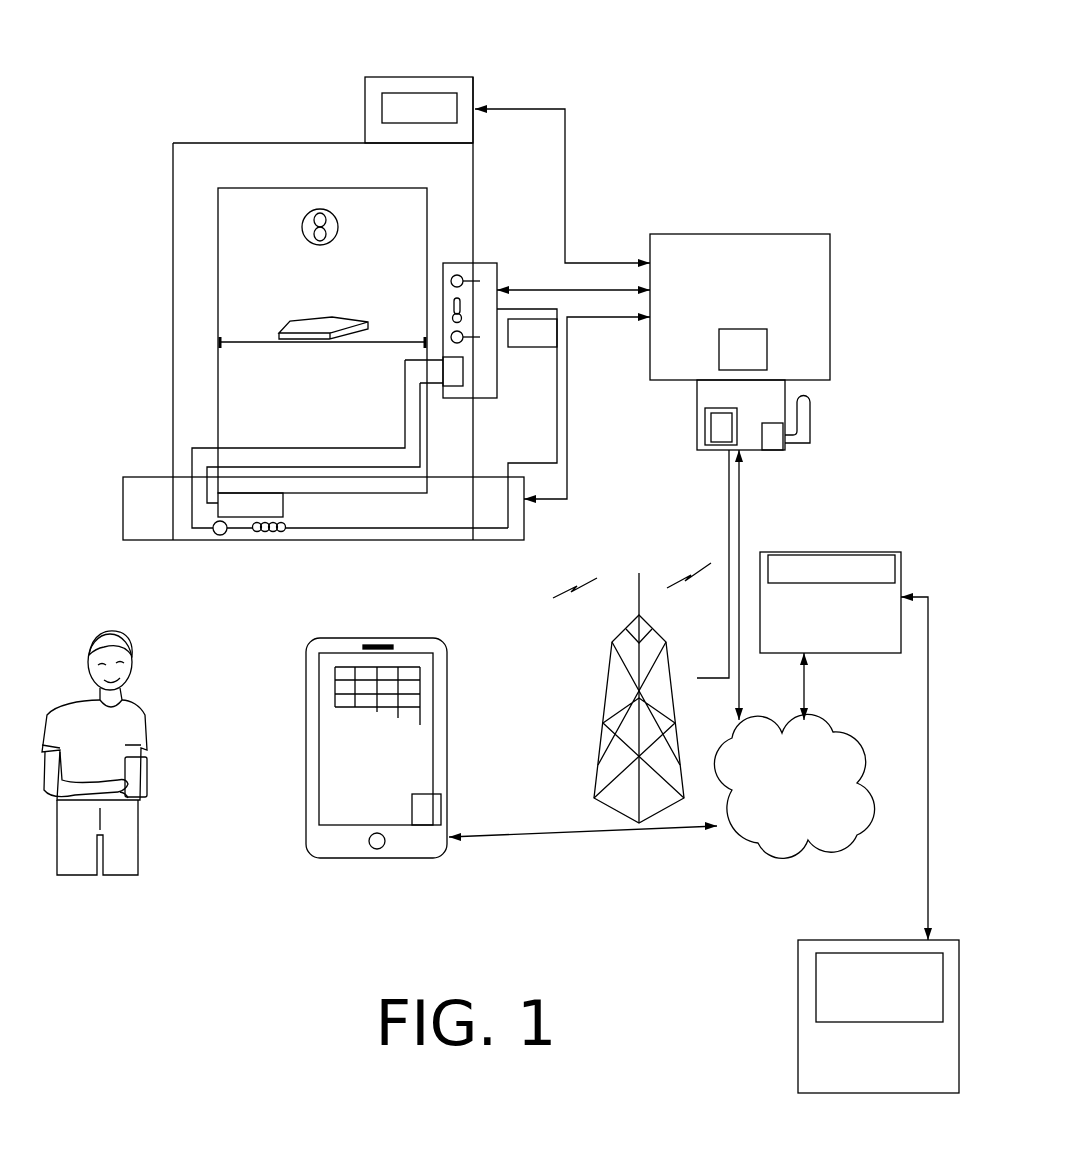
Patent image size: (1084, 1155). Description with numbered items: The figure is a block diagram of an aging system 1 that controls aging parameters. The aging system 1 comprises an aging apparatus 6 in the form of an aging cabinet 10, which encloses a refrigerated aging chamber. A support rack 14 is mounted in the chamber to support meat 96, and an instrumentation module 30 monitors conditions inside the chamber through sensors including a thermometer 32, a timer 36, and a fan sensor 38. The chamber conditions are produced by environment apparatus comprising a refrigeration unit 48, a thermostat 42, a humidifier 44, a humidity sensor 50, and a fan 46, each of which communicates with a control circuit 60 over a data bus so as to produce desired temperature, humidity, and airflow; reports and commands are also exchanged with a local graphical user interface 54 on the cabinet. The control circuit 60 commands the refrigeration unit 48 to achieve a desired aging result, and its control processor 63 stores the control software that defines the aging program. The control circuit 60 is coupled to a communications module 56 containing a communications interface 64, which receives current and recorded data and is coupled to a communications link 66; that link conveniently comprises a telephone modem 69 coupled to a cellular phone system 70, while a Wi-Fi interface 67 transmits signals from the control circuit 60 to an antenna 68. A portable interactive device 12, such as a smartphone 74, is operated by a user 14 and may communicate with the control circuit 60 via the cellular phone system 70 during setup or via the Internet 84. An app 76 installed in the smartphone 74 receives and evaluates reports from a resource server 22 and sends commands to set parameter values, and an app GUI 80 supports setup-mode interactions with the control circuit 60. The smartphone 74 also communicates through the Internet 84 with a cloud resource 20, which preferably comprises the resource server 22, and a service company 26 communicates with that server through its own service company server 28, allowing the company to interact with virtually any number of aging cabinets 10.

The aging system 1 is at (686, 33).
The aging apparatus 6 is at (322, 91).
The aging cabinet 10 is at (195, 168).
The portable interactive device 12 is at (232, 250).
The support rack 14 is at (237, 342).
The cloud resource 20 is at (852, 647).
The resource server 22 is at (857, 553).
The service company 26 is at (820, 1047).
The service company server 28 is at (817, 988).
The instrumentation module 30 is at (502, 210).
The thermometer 32 is at (463, 302).
The timer 36 is at (457, 275).
The fan sensor 38 is at (462, 342).
The thermostat 42 is at (547, 345).
The humidifier 44 is at (272, 503).
The fan 46 is at (318, 210).
The refrigeration unit 48 is at (148, 513).
The humidity sensor 50 is at (450, 387).
The local graphical user interface 54 is at (457, 93).
The communications module 56 is at (848, 426).
The control circuit 60 is at (725, 245).
The control processor 63 is at (758, 362).
The communications interface 64 is at (702, 450).
The communications link 66 is at (709, 411).
The Wi-Fi interface 67 is at (777, 437).
The antenna 68 is at (805, 410).
The telephone modem 69 is at (727, 424).
The cellular phone system 70 is at (597, 701).
The smartphone 74 is at (306, 752).
The app 76 is at (425, 815).
The app GUI 80 is at (375, 677).
The Internet 84 is at (772, 815).
The food item 96 is at (283, 325).